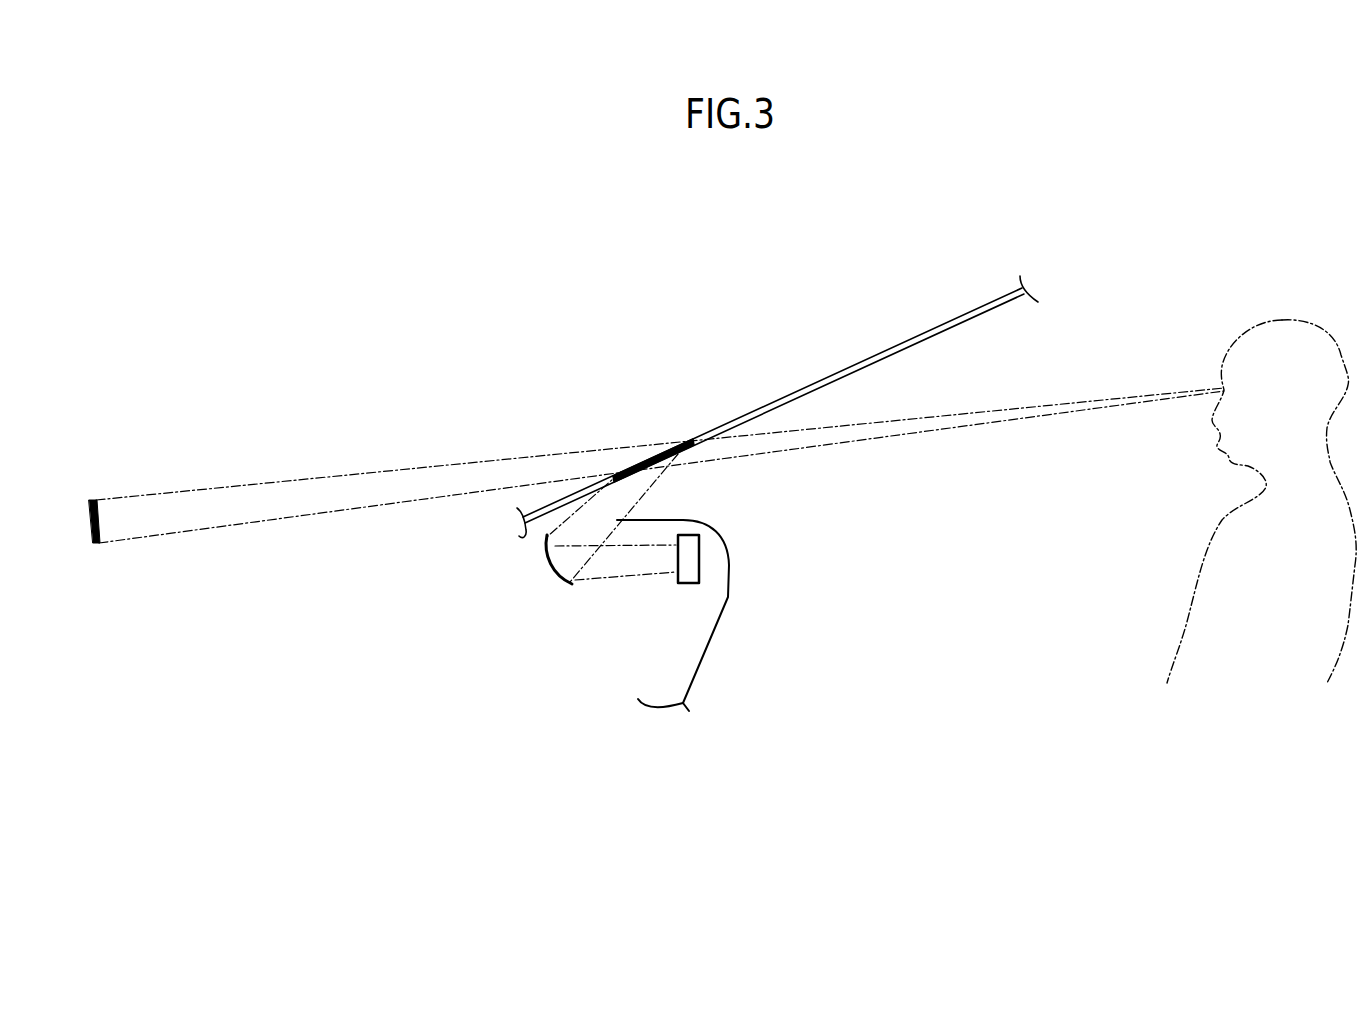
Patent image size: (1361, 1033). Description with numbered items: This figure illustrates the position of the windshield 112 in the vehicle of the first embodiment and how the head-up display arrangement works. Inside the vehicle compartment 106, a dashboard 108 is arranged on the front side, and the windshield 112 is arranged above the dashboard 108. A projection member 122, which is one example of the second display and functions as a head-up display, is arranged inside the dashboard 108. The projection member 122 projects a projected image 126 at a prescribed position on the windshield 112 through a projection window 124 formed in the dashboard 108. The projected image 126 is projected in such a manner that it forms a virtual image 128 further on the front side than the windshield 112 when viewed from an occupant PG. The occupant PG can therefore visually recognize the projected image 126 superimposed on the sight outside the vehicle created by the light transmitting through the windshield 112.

The vehicle compartment 106 is at (968, 680).
The dashboard 108 is at (730, 597).
The windshield 112 is at (829, 372).
The projection member 122 is at (557, 592).
The projection window 124 is at (617, 521).
The projected image 126 is at (648, 448).
The virtual image 128 is at (90, 510).
The occupant PG is at (1278, 318).